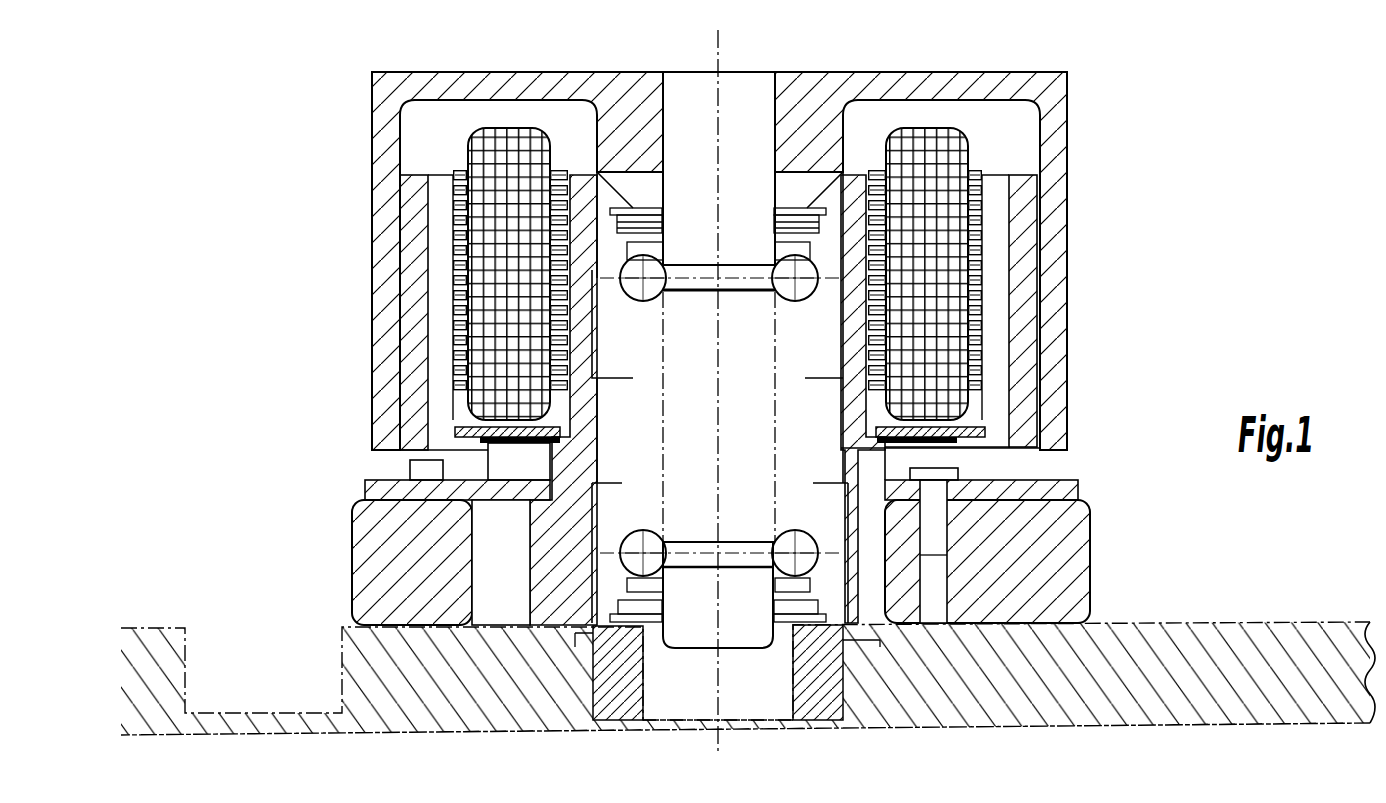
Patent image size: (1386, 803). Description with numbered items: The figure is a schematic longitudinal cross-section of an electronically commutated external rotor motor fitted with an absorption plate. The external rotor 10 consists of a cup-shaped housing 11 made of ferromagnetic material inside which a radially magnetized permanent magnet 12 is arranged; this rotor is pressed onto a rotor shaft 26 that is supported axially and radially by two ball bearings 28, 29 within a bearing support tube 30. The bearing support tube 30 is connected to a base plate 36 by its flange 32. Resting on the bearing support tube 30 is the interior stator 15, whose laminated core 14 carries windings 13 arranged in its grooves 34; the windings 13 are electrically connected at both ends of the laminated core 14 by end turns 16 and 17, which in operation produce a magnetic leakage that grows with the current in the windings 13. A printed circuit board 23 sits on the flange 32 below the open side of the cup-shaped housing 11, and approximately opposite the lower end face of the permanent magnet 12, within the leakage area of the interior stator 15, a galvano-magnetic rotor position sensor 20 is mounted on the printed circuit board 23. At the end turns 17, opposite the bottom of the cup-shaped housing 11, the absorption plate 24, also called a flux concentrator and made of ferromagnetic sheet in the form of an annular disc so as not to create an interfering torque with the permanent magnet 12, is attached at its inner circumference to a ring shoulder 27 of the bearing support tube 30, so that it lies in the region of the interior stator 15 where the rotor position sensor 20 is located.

The external rotor 10 is at (1075, 111).
The cup-shaped housing 11 is at (1055, 146).
The permanent magnet 12 is at (1015, 238).
The windings 13 is at (935, 313).
The laminated core 14 is at (987, 330).
The interior stator 15 is at (497, 125).
The end turns 16 is at (945, 140).
The end turns 17 is at (935, 397).
The galvano-magnetic rotor position sensor 20 is at (410, 475).
The printed circuit board 23 is at (368, 488).
The absorption plate 24 is at (455, 432).
The rotor shaft 26 is at (683, 95).
The ring shoulder 27 is at (860, 453).
The ball bearing 28 is at (800, 302).
The ball bearing 29 is at (633, 530).
The bearing support tube 30 is at (847, 500).
The flange 32 is at (1065, 557).
The grooves 34 is at (462, 185).
The base plate 36 is at (120, 683).